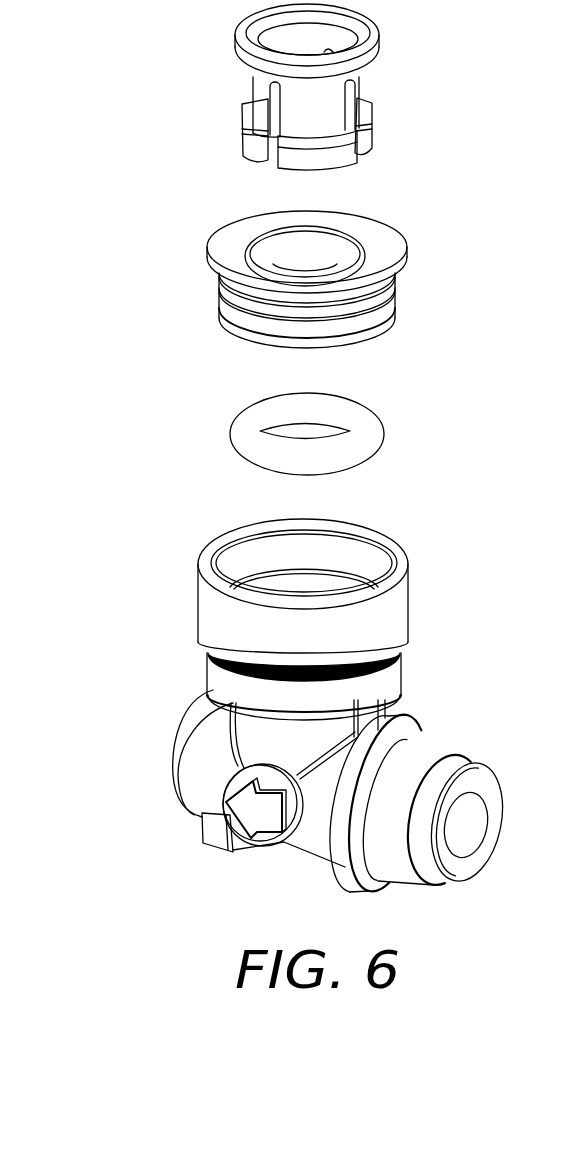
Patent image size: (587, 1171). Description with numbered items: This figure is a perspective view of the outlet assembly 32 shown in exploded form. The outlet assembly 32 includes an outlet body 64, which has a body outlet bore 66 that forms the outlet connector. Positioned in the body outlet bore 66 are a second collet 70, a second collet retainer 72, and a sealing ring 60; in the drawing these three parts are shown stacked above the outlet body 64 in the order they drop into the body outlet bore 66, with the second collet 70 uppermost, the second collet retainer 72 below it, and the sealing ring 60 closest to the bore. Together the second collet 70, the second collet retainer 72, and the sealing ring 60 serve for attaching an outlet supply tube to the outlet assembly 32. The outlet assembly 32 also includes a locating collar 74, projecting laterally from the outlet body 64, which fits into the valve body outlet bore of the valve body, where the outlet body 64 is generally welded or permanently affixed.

The outlet assembly 32 is at (149, 481).
The sealing ring 60 is at (365, 427).
The outlet body 64 is at (335, 608).
The body outlet bore 66 is at (357, 548).
The second collet 70 is at (378, 55).
The second collet retainer 72 is at (398, 261).
The locating collar 74 is at (430, 758).